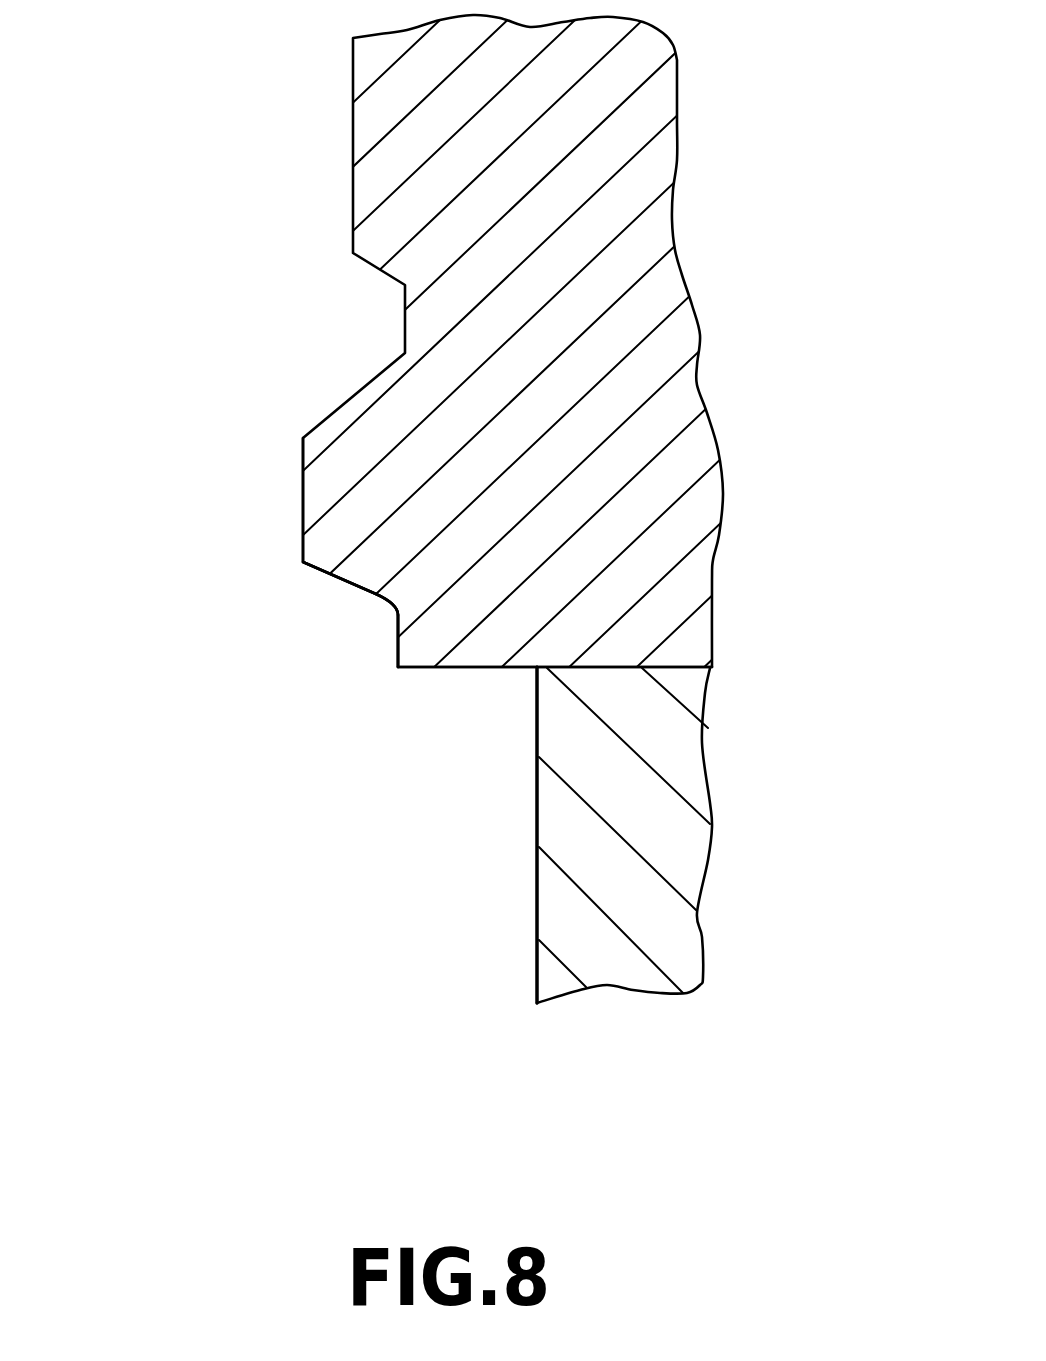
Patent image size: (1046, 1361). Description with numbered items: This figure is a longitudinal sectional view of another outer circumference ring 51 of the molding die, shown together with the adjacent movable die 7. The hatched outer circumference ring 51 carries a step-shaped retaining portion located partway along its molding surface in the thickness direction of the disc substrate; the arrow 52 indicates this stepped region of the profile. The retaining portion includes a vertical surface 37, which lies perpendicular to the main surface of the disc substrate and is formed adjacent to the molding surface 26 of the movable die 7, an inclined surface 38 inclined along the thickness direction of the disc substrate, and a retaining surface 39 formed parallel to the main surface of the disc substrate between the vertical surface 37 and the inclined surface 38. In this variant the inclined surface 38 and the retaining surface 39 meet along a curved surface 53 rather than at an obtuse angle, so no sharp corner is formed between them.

The outer circumference ring 51 is at (663, 365).
The movable die 7 is at (685, 833).
The vertical surface 37 is at (493, 668).
The inclined surface 38 is at (338, 577).
The rounded edge 53 is at (386, 605).
The retaining surface 39 is at (398, 642).
The molding surface 26 is at (537, 942).
The stepped portion / recess 52 is at (263, 732).